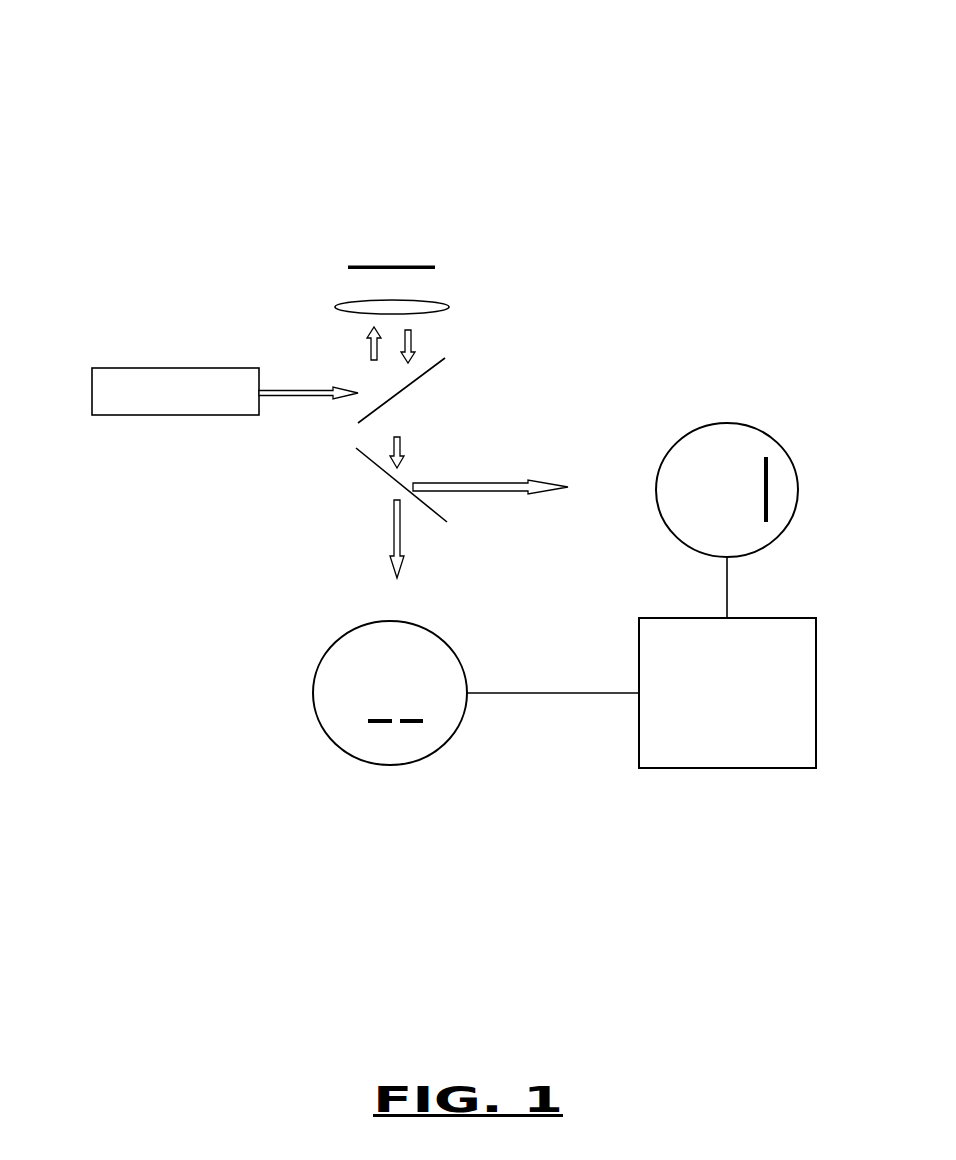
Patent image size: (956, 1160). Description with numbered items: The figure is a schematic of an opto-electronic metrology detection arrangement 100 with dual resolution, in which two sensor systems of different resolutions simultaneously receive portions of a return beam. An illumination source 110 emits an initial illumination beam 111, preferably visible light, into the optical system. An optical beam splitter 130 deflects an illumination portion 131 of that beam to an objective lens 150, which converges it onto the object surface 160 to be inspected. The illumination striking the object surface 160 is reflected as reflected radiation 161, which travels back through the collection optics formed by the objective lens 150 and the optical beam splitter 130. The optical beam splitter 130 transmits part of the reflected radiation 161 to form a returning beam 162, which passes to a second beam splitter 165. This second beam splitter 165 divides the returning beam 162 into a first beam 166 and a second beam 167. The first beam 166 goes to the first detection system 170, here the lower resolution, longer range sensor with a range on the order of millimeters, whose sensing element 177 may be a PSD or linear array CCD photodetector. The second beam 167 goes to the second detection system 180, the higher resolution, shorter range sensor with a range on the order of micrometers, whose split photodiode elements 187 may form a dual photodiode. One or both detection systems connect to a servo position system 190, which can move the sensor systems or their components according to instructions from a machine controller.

The opto-electronic metrology detection arrangement 100 is at (293, 88).
The illumination source 110 is at (136, 367).
The laser beam 111 is at (292, 400).
The optical beam splitter 130 is at (455, 370).
The illumination portion 131 is at (370, 338).
The objective lens 150 is at (449, 303).
The object surface 160 is at (440, 265).
The reflected radiation 161 is at (417, 339).
The returning beam 162 is at (408, 449).
The second beam splitter 165 is at (372, 475).
The first beam 166 is at (512, 478).
The second beam 167 is at (404, 555).
The first detection system 170 is at (744, 413).
The detector element of first detector 177 is at (777, 488).
The second detection system 180 is at (323, 743).
The split detector elements of second detector 187 is at (412, 732).
The servo position system 190 is at (745, 757).